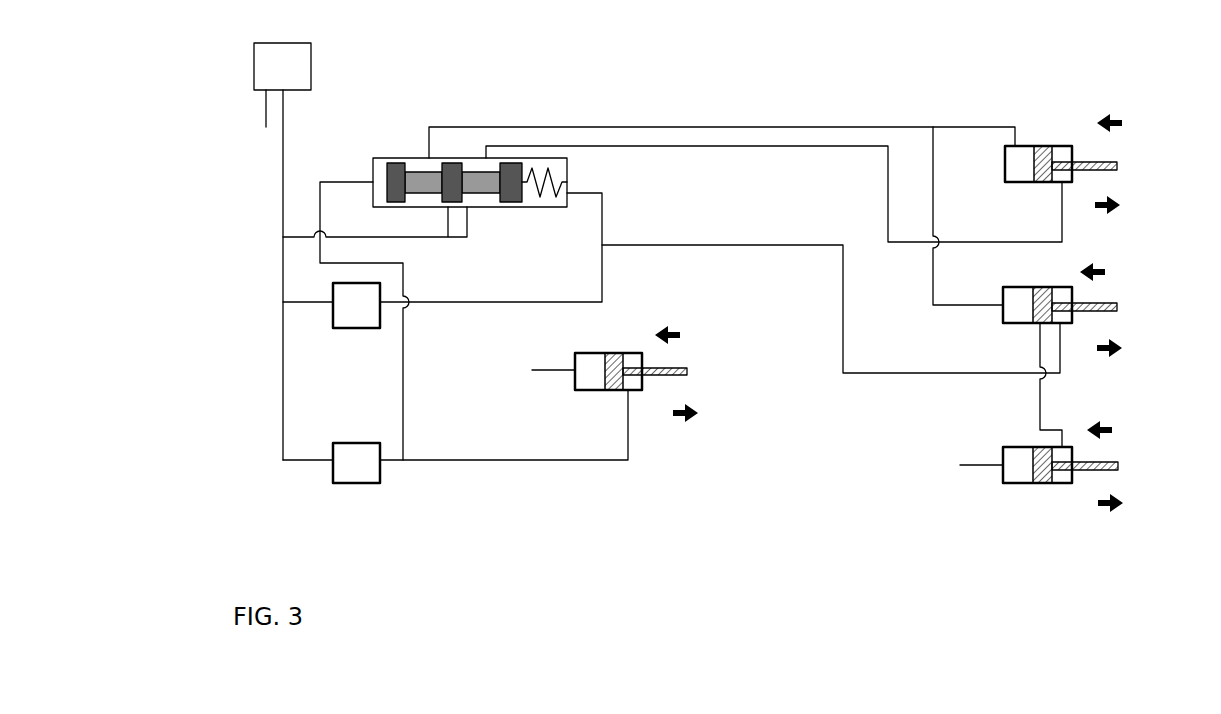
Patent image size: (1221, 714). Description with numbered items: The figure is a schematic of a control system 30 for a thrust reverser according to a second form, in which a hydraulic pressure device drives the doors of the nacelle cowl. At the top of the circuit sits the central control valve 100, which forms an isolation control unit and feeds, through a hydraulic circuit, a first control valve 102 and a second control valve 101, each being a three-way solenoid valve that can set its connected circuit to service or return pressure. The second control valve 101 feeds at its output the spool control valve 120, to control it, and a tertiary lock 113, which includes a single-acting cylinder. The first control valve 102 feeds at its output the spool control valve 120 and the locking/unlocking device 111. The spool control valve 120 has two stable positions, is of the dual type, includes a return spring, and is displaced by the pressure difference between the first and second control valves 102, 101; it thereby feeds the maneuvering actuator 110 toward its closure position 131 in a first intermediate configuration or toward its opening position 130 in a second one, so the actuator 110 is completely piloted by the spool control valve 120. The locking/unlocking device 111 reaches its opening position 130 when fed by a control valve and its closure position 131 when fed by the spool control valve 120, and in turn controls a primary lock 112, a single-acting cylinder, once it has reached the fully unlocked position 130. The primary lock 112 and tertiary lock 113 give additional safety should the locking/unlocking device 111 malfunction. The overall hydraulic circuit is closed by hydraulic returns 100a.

The control system 30 is at (675, 113).
The central control valve 100 is at (298, 62).
The hydraulic returns 100a is at (266, 123).
The second control valve 101 is at (337, 475).
The first control valve 102 is at (337, 318).
The maneuvering actuator 110 is at (1005, 183).
The locking/unlocking device 111 is at (1003, 323).
The primary lock 112 is at (1003, 483).
The tertiary lock 113 is at (617, 353).
The spool control valve 120 is at (567, 162).
The opening position 130 is at (680, 340).
The closure position 131 is at (698, 418).